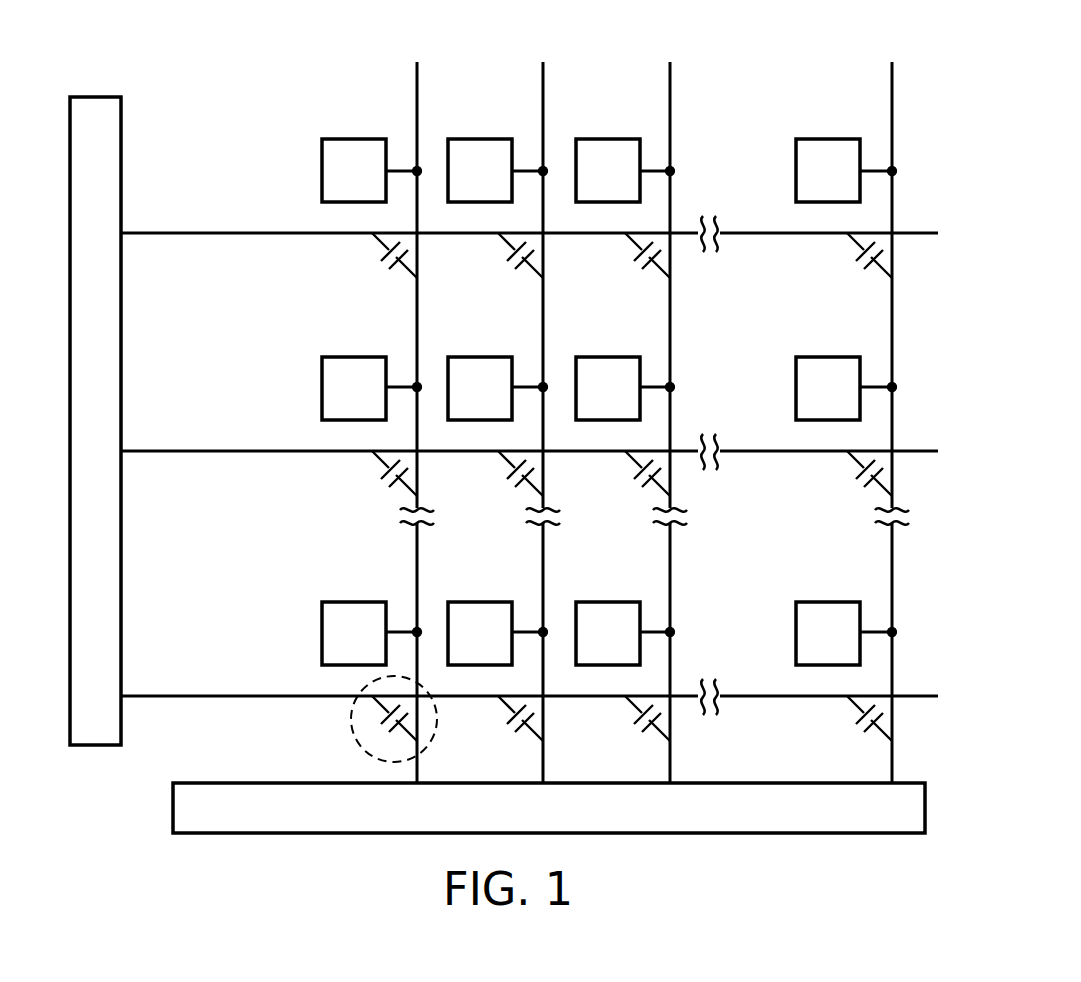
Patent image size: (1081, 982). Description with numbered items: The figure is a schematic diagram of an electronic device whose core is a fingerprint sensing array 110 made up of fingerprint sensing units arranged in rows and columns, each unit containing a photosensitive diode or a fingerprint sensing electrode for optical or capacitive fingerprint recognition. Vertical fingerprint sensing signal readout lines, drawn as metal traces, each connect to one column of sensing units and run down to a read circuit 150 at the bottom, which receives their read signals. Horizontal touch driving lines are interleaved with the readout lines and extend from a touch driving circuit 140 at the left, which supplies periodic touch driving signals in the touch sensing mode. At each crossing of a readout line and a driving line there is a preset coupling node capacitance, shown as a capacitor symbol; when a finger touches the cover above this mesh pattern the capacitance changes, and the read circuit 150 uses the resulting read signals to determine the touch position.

The fingerprint sensing array 110 is at (960, 86).
The touch driving circuit 140 is at (95, 97).
The read circuit 150 is at (925, 805).